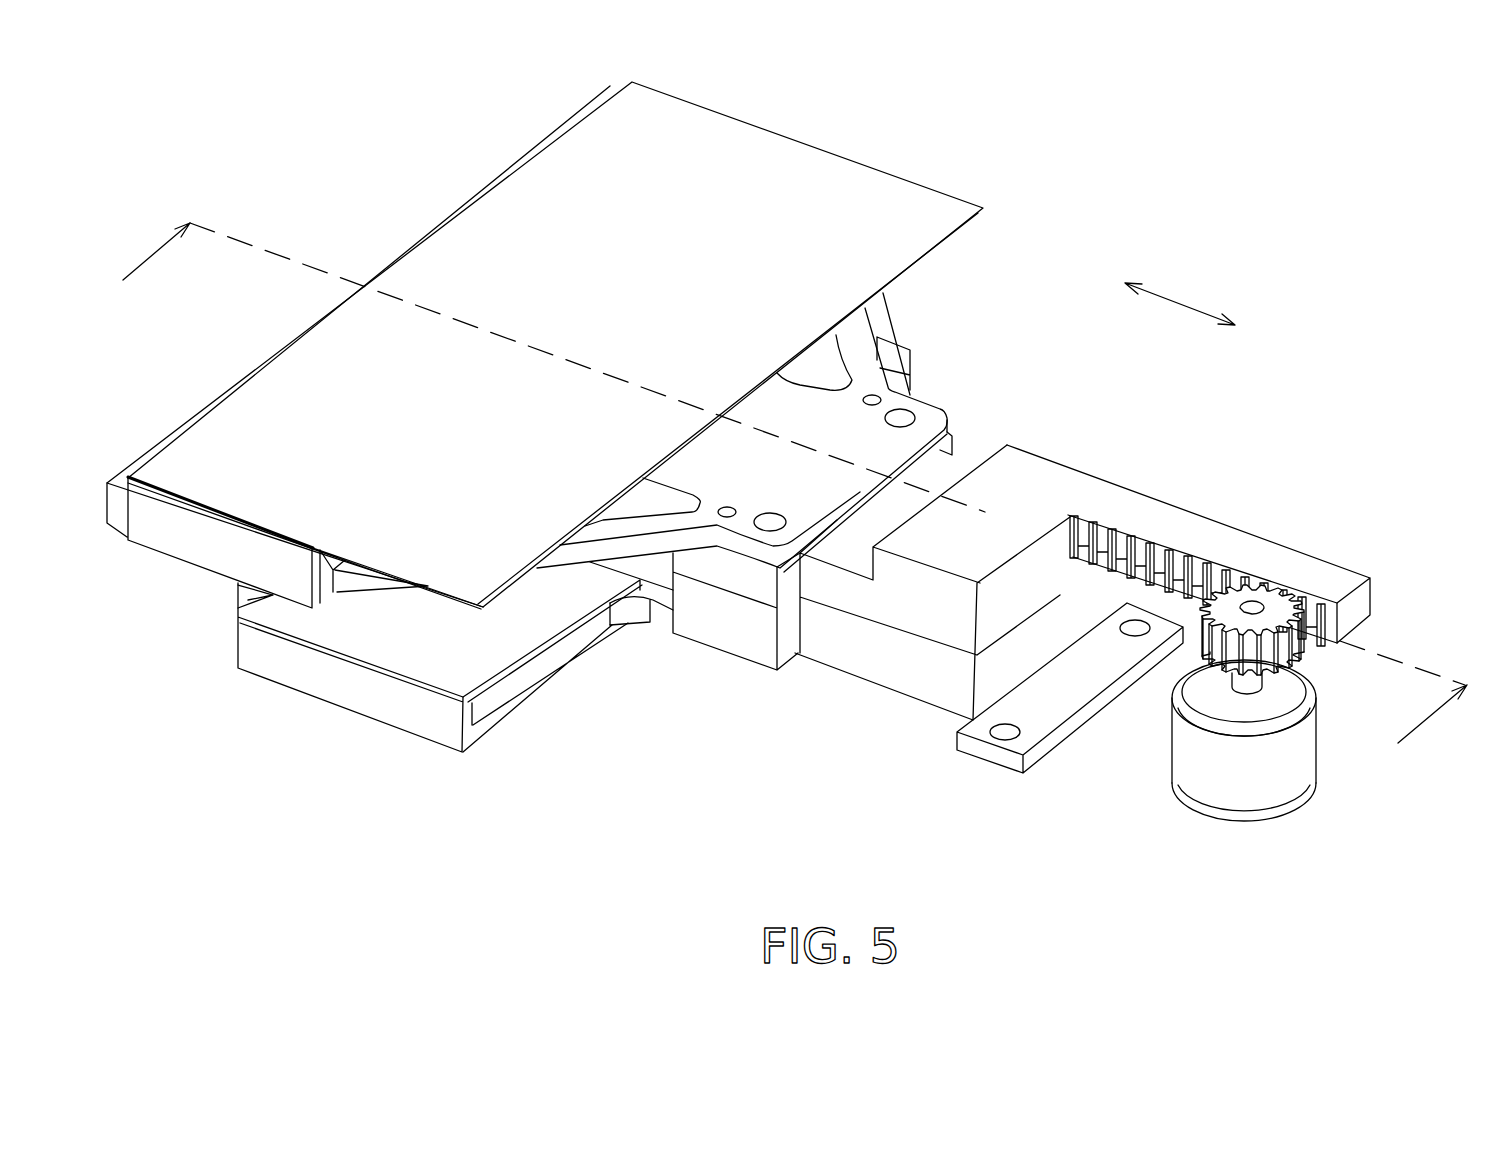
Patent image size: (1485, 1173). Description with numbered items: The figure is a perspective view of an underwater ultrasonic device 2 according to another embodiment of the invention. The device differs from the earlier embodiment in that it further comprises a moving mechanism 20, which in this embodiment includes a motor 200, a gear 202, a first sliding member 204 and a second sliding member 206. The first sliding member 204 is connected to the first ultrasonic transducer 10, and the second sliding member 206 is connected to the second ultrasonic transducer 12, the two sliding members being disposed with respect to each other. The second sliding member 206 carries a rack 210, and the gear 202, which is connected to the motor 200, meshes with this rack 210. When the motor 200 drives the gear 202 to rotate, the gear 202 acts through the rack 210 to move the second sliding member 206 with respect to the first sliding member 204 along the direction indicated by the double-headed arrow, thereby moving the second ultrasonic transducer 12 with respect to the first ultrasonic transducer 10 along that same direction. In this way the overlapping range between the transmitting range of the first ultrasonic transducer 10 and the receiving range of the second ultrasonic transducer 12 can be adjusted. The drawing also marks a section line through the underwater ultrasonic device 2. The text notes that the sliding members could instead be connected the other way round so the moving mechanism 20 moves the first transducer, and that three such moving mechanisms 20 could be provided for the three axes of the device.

The underwater ultrasonic device 2 is at (785, 480).
The first ultrasonic transducer 10 is at (343, 692).
The second ultrasonic transducer 12 is at (183, 540).
The moving mechanism 20 is at (1021, 617).
The motor 200 is at (1240, 807).
The gear 202 is at (1265, 597).
The first sliding member 204 is at (867, 660).
The second sliding member 206 is at (1050, 448).
The rack 210 is at (1185, 553).